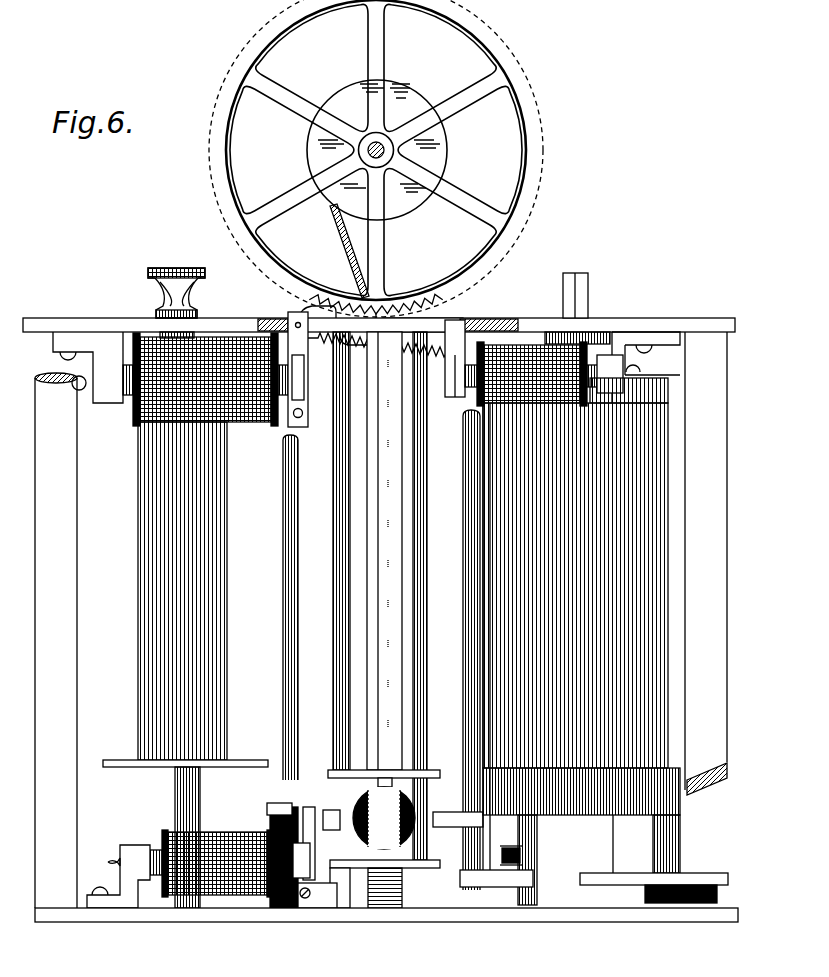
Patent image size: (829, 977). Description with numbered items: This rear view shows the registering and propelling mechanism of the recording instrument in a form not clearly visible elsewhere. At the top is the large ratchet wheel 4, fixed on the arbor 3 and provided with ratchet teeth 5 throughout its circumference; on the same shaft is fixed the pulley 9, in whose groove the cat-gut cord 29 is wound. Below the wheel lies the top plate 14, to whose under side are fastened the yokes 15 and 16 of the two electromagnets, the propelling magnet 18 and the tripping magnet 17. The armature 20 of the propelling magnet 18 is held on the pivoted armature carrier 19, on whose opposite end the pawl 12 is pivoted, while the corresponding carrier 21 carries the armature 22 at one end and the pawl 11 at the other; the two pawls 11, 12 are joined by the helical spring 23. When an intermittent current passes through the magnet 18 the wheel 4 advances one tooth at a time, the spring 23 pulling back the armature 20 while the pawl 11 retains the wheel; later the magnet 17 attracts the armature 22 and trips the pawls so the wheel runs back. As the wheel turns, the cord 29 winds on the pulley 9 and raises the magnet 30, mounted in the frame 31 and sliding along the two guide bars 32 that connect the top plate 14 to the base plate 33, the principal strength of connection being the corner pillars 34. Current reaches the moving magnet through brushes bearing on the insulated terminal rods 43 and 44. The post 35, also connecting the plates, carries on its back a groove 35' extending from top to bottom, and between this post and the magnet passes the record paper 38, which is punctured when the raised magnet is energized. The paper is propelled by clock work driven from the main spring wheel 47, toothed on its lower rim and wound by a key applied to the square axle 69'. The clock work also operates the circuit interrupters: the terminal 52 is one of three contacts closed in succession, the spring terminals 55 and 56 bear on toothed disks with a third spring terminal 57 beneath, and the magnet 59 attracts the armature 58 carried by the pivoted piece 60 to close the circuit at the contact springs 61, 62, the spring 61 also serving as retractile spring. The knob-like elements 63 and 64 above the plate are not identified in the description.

The arbor 3 is at (398, 150).
The ratchet wheel 4 is at (376, 158).
The teeth 5 is at (398, 318).
The pulley 9 is at (377, 150).
The pawl 11 is at (445, 320).
The pawl 12 is at (290, 300).
The top plate 14 is at (74, 332).
The magnet yoke 15 is at (118, 398).
The magnet yoke 16 is at (605, 372).
The tripping magnet 17 is at (537, 366).
The propelling magnet 18 is at (218, 337).
The pivoted armature carrier 19 is at (304, 427).
The armature 20 is at (313, 377).
The armature carrier 21 is at (450, 397).
The armature 22 is at (462, 405).
The helical spring 23 is at (379, 349).
The flexible cord 29 is at (344, 251).
The magnet 30 is at (415, 802).
The frame 31 is at (440, 770).
The guide bars 32 is at (340, 652).
The base plate 33 is at (386, 927).
The corner pillars 34 is at (381, 620).
The post 35 is at (413, 551).
The groove 35' is at (420, 551).
The sheet of paper 38 is at (668, 537).
The electric terminal rod 43 is at (451, 601).
The electric terminal rod 44 is at (302, 607).
The main spring wheel 47 is at (680, 800).
The terminal 52 is at (594, 886).
The spring terminal 55 is at (518, 845).
The spring terminal 56 is at (522, 853).
The third spring terminal 57 is at (522, 866).
The armature 58 is at (310, 852).
The magnet 59 is at (180, 861).
The pivoted piece 60 is at (333, 814).
The contact spring 61 is at (309, 807).
The contact spring 62 is at (290, 803).
The knob 63 is at (176, 282).
The knob base 64 is at (152, 310).
The square axle 69' is at (605, 282).